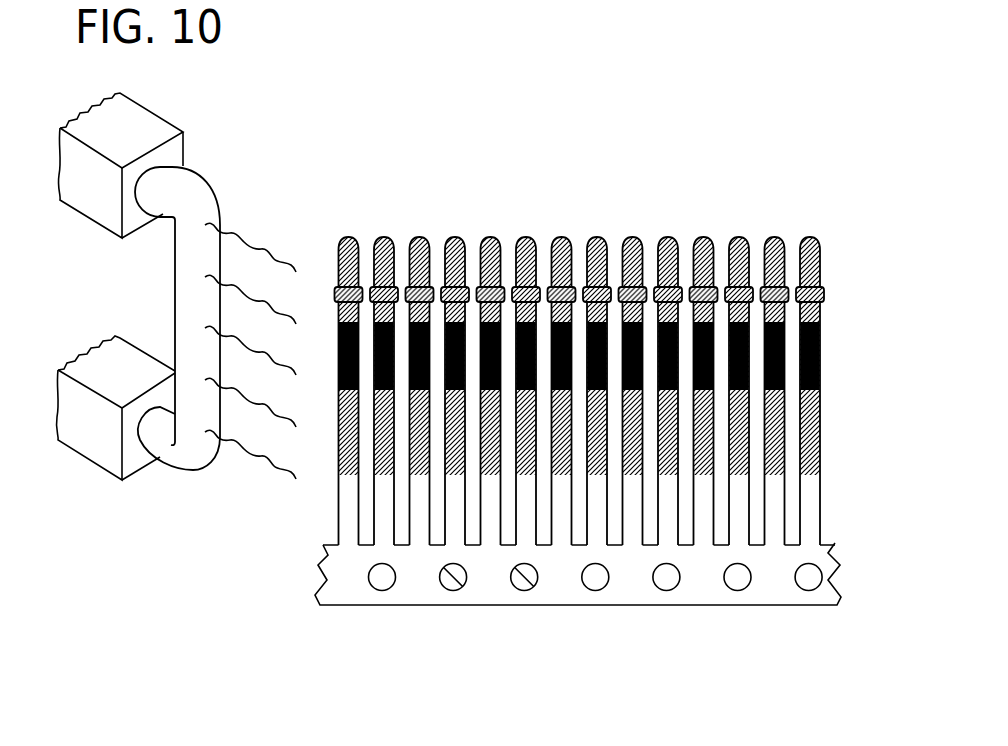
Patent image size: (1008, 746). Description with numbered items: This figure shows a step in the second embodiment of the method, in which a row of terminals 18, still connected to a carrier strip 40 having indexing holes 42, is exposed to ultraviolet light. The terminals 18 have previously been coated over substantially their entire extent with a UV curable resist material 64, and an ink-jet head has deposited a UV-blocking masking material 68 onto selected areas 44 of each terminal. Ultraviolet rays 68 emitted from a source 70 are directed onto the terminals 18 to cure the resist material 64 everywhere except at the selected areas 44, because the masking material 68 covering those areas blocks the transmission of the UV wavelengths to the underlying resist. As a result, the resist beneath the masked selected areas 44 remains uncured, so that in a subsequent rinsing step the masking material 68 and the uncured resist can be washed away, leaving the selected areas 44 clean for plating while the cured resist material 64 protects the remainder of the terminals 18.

The terminals 18 is at (672, 233).
The carrier strip 40 is at (430, 583).
The indexing holes 42 is at (516, 589).
The selected areas 44 is at (807, 252).
The resist material 64 is at (419, 240).
The ultraviolet rays 68 is at (258, 352).
The source 70 is at (180, 192).